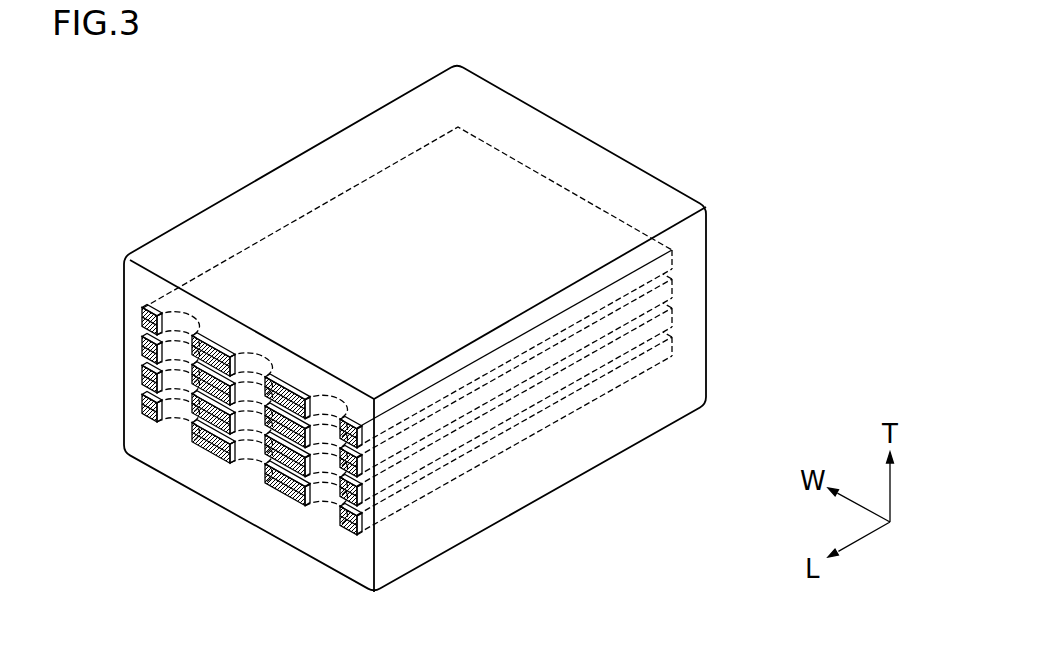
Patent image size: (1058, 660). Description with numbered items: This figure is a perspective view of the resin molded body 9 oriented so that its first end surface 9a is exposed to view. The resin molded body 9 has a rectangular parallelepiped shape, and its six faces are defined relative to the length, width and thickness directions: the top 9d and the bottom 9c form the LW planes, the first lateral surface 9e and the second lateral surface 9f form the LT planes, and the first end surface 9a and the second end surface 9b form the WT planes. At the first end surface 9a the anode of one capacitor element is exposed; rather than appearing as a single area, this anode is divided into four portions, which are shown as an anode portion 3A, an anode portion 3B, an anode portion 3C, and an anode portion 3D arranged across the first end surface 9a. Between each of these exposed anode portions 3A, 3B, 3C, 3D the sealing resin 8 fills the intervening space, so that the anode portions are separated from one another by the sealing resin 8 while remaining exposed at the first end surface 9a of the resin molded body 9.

The resin molded body 9 is at (376, 320).
The first end surface 9a is at (138, 331).
The second end surface 9b is at (518, 122).
The bottom 9c is at (487, 502).
The top 9d is at (382, 225).
The first lateral surface 9e is at (578, 380).
The second lateral surface 9f is at (350, 150).
The anode portion 3A is at (145, 388).
The anode portion 3B is at (190, 450).
The anode portion 3C is at (267, 483).
The anode portion 3D is at (342, 510).
The sealing resin 8 is at (175, 385).